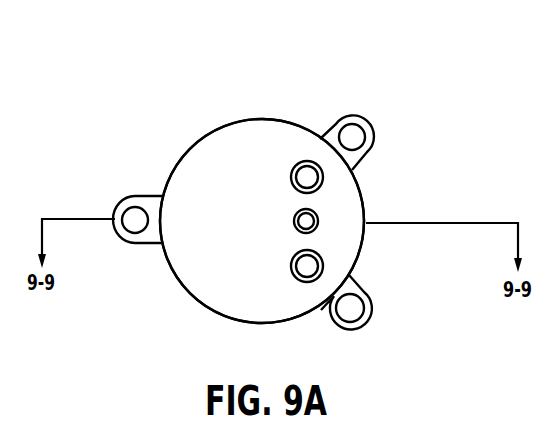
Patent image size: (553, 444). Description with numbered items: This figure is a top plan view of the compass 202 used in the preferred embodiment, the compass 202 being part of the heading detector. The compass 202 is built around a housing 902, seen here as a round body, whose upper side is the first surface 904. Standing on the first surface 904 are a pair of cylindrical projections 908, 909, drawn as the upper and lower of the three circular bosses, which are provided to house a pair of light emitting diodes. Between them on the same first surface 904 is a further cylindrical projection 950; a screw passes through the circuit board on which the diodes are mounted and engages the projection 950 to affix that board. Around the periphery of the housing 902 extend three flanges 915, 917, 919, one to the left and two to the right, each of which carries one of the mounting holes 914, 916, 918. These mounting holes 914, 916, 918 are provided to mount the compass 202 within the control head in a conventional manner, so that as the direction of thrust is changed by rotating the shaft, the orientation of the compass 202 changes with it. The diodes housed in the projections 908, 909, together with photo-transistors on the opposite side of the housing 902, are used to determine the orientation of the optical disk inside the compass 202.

The compass 202 is at (237, 87).
The housing 902 is at (353, 265).
The first surface 904 is at (207, 168).
The cylindrical projection 908 is at (323, 174).
The cylindrical projection 950 is at (318, 218).
The cylindrical projection 909 is at (323, 262).
The mounting hole 914 is at (131, 210).
The flange 915 is at (120, 240).
The mounting hole 916 is at (352, 120).
The flange 917 is at (373, 129).
The mounting hole 918 is at (353, 327).
The flange 919 is at (371, 313).